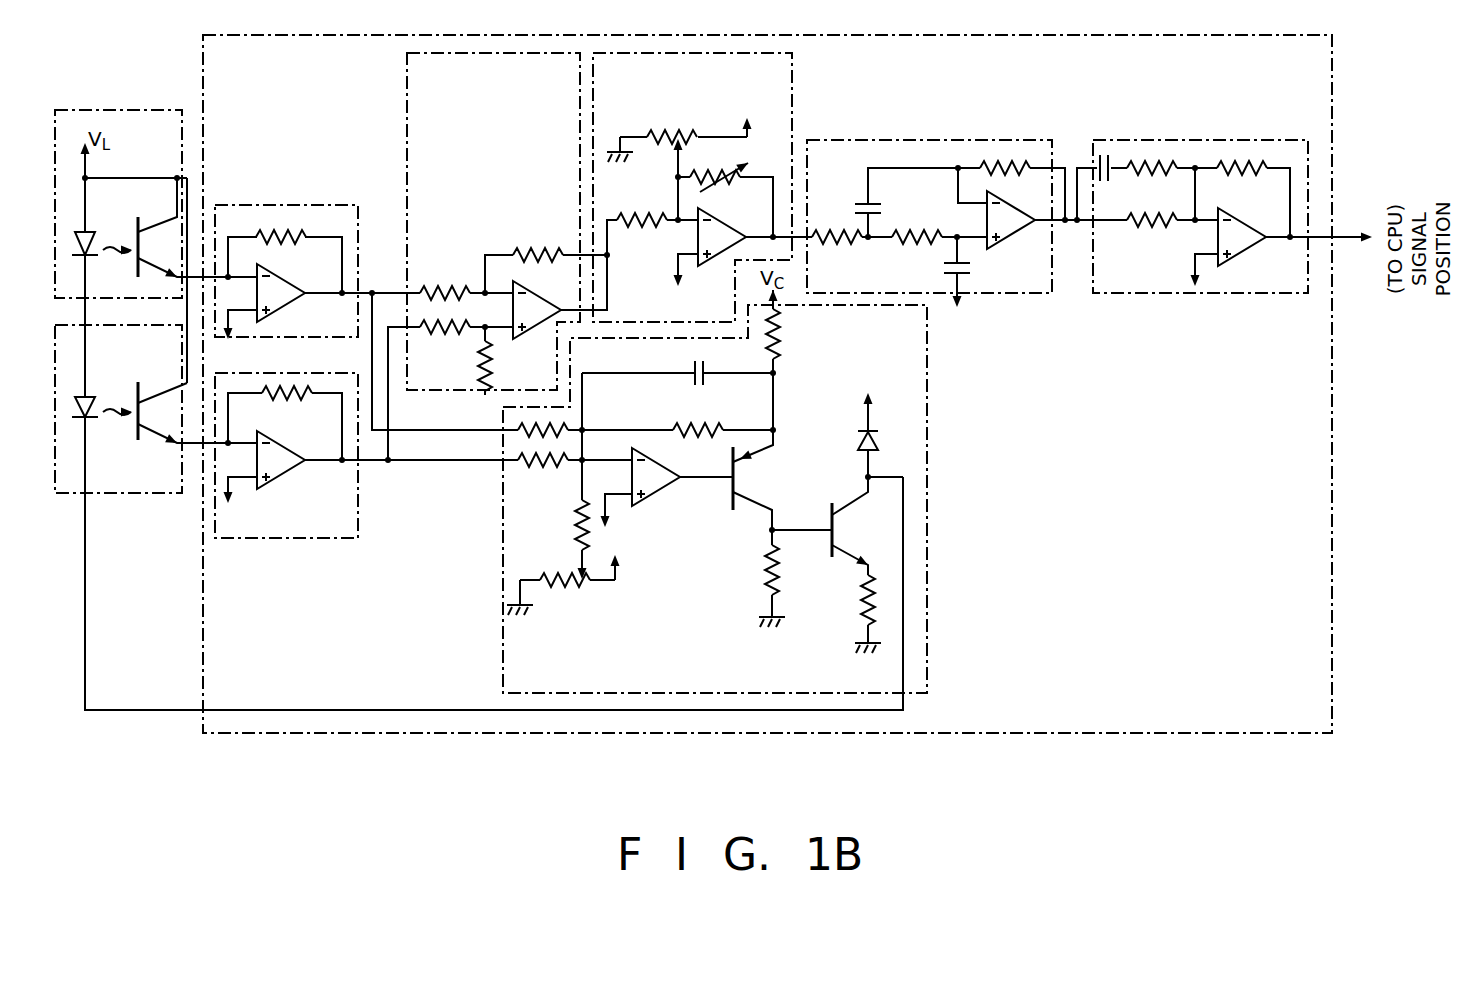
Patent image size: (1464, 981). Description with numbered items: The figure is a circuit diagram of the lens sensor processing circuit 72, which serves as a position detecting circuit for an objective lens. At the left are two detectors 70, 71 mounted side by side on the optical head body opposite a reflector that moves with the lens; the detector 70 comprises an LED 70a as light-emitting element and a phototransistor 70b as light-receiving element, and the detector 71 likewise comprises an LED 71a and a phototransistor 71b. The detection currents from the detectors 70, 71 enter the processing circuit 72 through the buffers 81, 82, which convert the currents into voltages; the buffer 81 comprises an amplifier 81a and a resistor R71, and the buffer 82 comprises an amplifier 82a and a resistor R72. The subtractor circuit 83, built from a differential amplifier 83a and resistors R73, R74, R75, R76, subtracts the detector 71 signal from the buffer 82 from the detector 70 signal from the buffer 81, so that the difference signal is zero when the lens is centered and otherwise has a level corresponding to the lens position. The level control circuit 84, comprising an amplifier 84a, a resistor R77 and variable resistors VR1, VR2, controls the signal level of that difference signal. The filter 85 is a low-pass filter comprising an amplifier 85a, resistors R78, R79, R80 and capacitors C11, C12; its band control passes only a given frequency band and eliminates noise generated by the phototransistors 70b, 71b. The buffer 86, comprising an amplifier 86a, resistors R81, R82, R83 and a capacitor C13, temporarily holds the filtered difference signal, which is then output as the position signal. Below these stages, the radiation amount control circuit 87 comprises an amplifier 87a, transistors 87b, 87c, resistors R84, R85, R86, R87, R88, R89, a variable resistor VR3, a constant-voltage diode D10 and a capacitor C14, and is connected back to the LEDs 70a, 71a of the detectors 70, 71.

The detector 70 is at (78, 110).
The LED 70a is at (97, 232).
The phototransistor 70b is at (147, 214).
The detector 71 is at (71, 495).
The LED 71a is at (97, 397).
The phototransistor 71b is at (152, 385).
The lens sensor processing circuit 72 is at (1157, 733).
The buffer 81 is at (313, 203).
The amplifier 81a is at (290, 283).
The buffer 82 is at (333, 530).
The amplifier 82a is at (287, 463).
The subtractor circuit 83 is at (407, 183).
The differential amplifier 83a is at (525, 287).
The level control circuit 84 is at (793, 122).
The amplifier 84a is at (728, 223).
The filter 85 is at (910, 142).
The amplifier 85a is at (1012, 227).
The buffer 86 is at (1217, 140).
The amplifier 86a is at (1252, 247).
The radiation amount control circuit 87 is at (928, 437).
The amplifier 87a is at (656, 492).
The transistor 87b is at (755, 479).
The transistor 87c is at (843, 536).
The resistor R71 is at (280, 228).
The resistor R72 is at (285, 400).
The resistor R73 is at (448, 285).
The resistor R74 is at (448, 332).
The resistor R75 is at (478, 370).
The resistor R76 is at (543, 240).
The resistor R77 is at (650, 210).
The resistor R78 is at (840, 230).
The resistor R79 is at (920, 232).
The resistor R80 is at (993, 170).
The resistor R81 is at (1150, 175).
The resistor R82 is at (1143, 226).
The resistor R83 is at (1240, 175).
The resistor R84 is at (518, 440).
The resistor R85 is at (537, 469).
The resistor R86 is at (576, 541).
The resistor R87 is at (692, 443).
The resistor R88 is at (767, 571).
The resistor R89 is at (866, 600).
The capacitor C11 is at (860, 187).
The capacitor C12 is at (968, 271).
The capacitor C13 is at (1102, 153).
The capacitor C14 is at (706, 398).
The variable resistor VR1 is at (690, 130).
The variable resistor VR2 is at (718, 173).
The variable resistor VR3 is at (565, 594).
The constant-voltage diode D10 is at (858, 440).